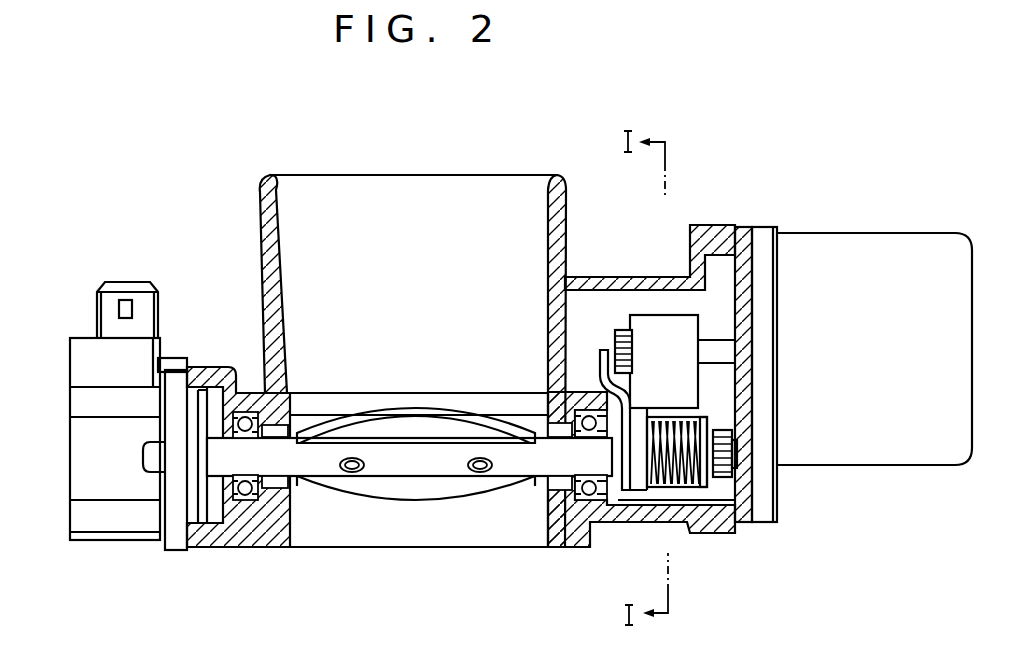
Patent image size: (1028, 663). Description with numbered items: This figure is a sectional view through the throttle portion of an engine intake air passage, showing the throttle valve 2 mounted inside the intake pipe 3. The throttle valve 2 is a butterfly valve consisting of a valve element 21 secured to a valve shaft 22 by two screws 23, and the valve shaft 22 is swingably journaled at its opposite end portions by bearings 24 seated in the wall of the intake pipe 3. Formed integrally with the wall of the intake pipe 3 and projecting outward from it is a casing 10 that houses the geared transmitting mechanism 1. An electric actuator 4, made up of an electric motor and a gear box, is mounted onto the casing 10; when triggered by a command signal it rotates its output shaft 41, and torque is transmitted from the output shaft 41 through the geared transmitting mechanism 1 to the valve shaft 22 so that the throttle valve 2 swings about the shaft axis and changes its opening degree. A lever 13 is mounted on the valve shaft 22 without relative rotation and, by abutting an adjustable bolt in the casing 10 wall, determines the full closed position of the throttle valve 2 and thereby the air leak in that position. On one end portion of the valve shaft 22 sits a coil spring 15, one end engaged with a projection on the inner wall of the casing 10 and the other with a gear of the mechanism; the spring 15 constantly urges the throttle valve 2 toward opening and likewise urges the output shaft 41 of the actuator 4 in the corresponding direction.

The geared transmitting mechanism 1 is at (680, 310).
The throttle valve 2 is at (357, 400).
The intake pipe 3 is at (258, 214).
The actuator 4 is at (933, 410).
The casing 10 is at (640, 277).
The lever 13 is at (603, 348).
The coil spring 15 is at (699, 460).
The valve element 21 is at (468, 497).
The valve shaft 22 is at (400, 462).
The screws 23 is at (352, 472).
The bearings 24 is at (253, 503).
The output shaft 41 is at (718, 340).